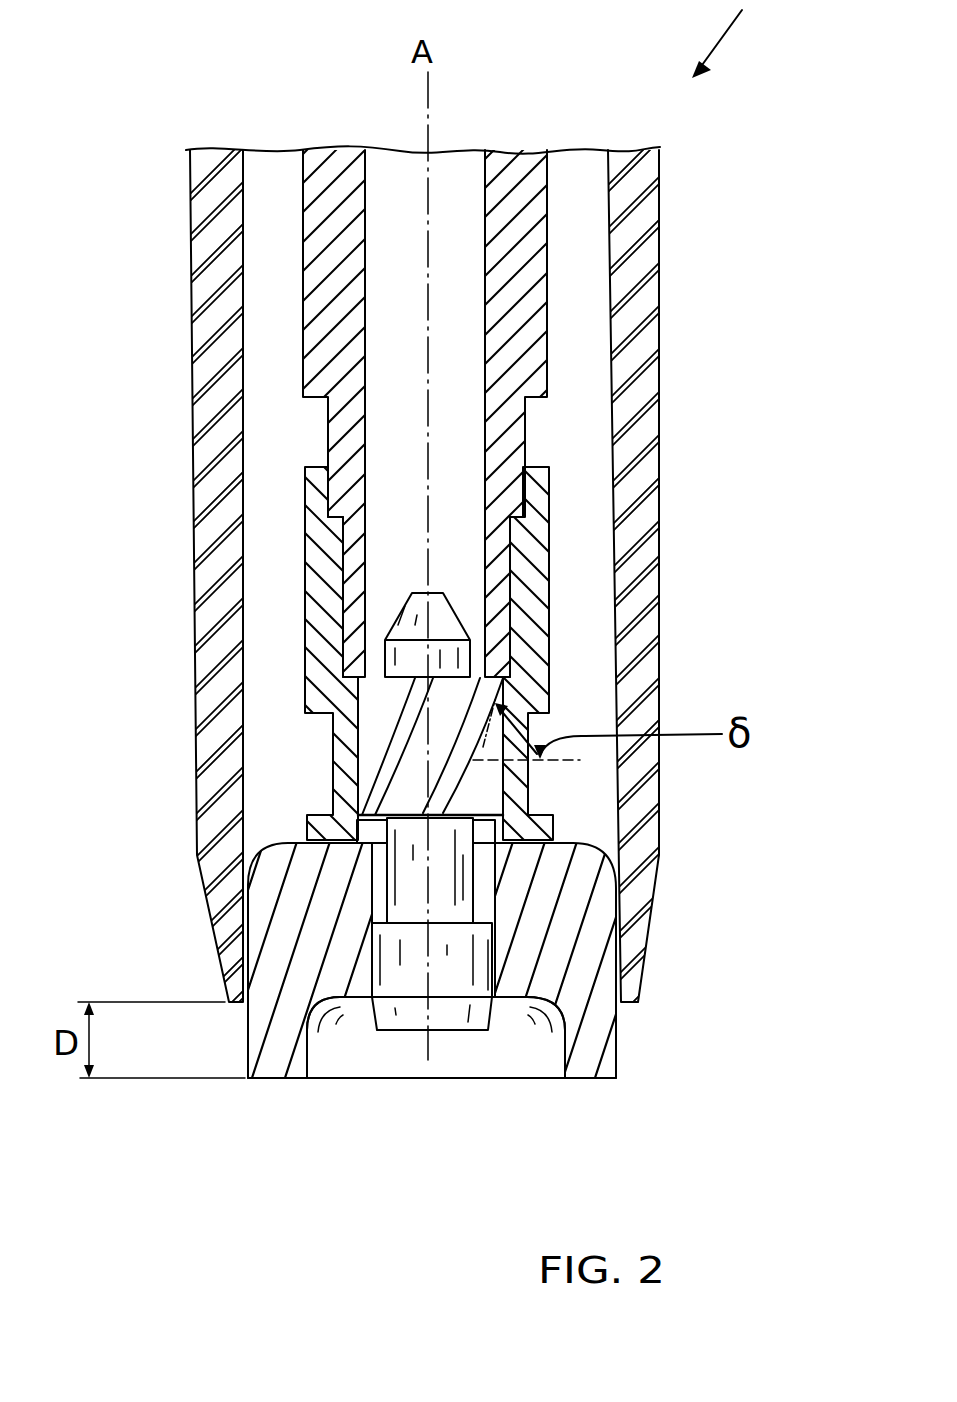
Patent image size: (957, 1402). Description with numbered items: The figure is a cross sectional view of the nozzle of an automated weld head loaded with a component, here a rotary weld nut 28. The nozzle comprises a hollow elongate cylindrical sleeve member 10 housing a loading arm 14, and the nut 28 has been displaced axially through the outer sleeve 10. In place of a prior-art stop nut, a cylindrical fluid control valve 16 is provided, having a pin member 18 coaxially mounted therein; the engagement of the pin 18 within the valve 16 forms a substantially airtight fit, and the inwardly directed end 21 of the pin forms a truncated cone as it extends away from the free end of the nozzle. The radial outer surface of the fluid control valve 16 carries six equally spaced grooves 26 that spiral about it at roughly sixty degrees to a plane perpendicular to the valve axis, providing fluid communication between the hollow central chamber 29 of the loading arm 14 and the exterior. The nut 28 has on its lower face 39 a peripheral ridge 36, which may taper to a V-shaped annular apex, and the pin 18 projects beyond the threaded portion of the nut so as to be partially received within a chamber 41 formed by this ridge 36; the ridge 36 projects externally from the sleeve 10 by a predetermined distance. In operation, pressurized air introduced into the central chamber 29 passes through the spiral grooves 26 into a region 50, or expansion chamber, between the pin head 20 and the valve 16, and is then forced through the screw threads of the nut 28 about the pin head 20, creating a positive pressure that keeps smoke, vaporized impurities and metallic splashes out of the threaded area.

The sleeve member 10 is at (640, 345).
The loading arm 14 is at (525, 232).
The fluid control valve 16 is at (445, 706).
The pin member 18 is at (450, 850).
The pin head 20 is at (417, 982).
The inwardly directed end 21 is at (438, 593).
The grooves 26 is at (393, 738).
The rotary weld nut 28 is at (575, 937).
The hollow central chamber 29 is at (457, 160).
The peripheral ridge 36 is at (590, 1055).
The lower face 39 is at (527, 1005).
The chamber 41 is at (335, 1045).
The region 50 is at (373, 828).